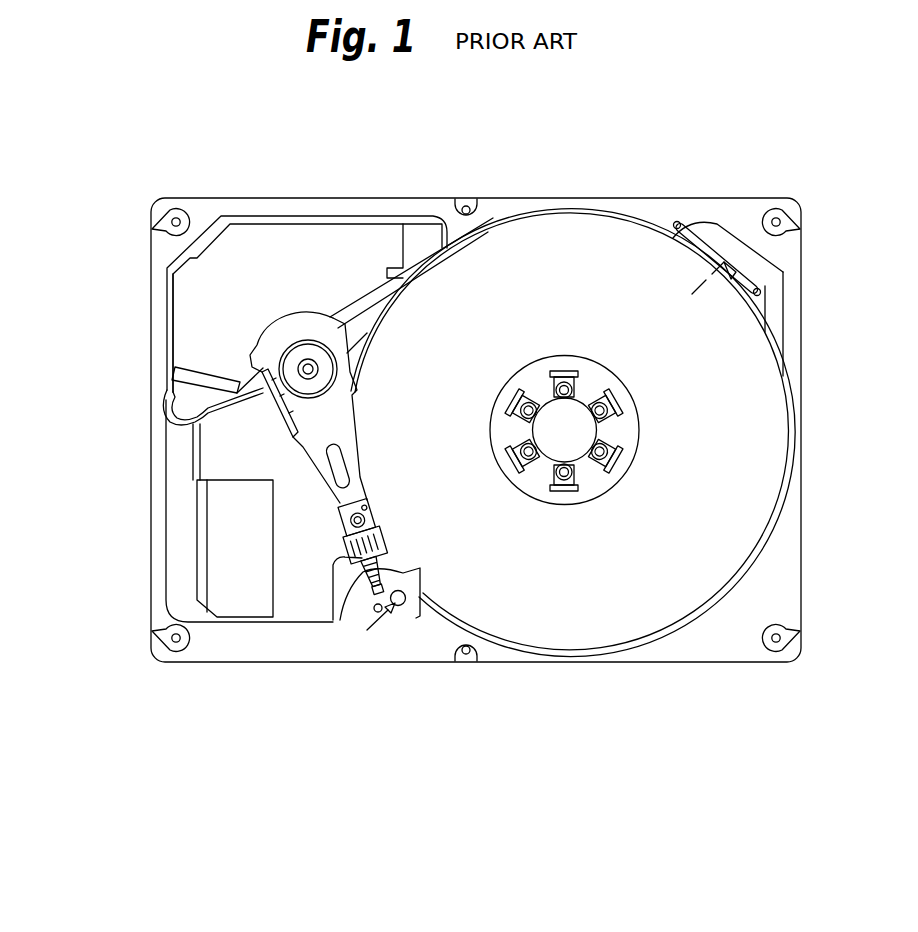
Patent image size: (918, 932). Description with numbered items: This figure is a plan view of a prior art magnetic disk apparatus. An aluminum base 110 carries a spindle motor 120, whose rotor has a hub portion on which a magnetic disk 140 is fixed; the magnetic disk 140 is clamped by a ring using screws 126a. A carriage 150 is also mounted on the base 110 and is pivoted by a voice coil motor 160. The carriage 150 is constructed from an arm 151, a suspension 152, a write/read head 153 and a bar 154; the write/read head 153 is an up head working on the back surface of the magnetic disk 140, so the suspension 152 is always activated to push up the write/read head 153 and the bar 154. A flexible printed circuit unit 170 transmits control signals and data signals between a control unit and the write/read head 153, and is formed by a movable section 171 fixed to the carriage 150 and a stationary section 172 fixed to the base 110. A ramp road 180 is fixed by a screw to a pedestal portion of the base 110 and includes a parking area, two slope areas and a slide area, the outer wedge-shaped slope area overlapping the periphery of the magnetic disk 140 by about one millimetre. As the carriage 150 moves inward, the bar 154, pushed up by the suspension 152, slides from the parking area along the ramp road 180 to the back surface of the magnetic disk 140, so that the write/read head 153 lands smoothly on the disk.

The base 110 is at (197, 210).
The spindle motor 120 is at (553, 422).
The screws 126a is at (565, 492).
The magnetic disk 140 is at (693, 565).
The carriage 150 is at (400, 748).
The arm 151 is at (297, 440).
The suspension 152 is at (345, 557).
The write/read head 153 is at (368, 582).
The bar 154 is at (352, 548).
The voice coil motor 160 is at (213, 318).
The flexible printed circuit unit 170 is at (98, 460).
The movable section 171 is at (193, 467).
The stationary section 172 is at (225, 540).
The ramp road 180 is at (410, 614).